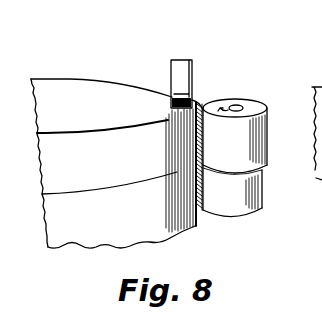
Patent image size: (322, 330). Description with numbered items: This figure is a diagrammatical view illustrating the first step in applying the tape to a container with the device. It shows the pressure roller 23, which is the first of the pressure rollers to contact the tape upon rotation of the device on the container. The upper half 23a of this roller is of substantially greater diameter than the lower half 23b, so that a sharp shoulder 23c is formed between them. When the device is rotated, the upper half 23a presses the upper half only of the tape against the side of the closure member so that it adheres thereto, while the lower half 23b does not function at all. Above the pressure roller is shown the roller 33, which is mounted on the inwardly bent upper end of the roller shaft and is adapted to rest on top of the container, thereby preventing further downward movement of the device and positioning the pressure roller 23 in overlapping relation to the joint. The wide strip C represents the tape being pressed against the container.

The ribbon / strip C is at (97, 92).
The roller 33 is at (180, 67).
The pressure roller 23 is at (239, 98).
The upper half 23a is at (248, 153).
The lower half 23b is at (253, 195).
The shoulder 23c is at (258, 170).